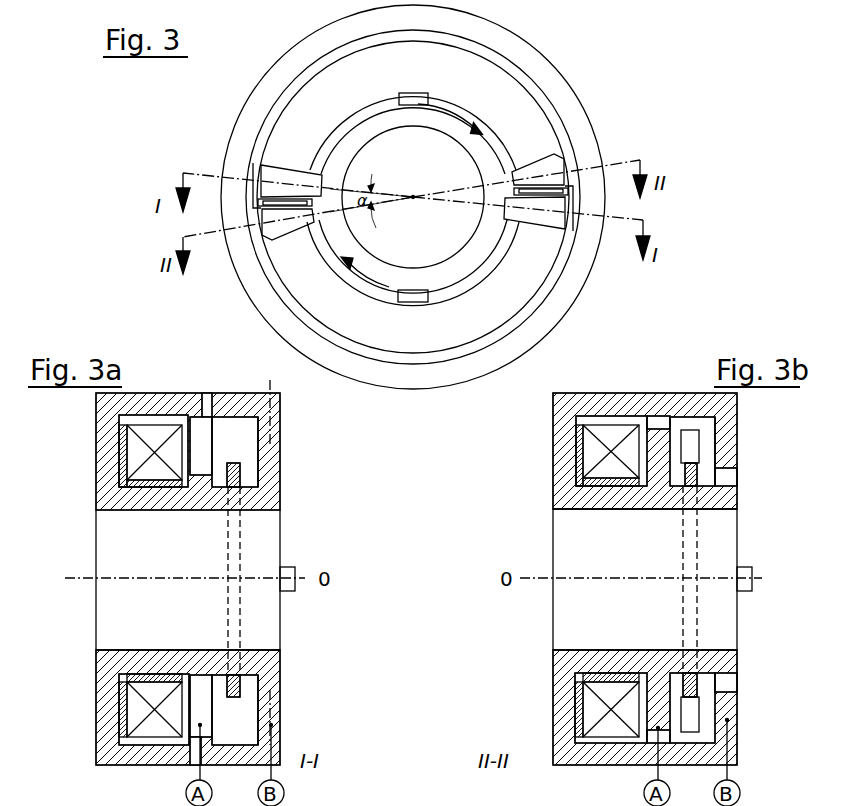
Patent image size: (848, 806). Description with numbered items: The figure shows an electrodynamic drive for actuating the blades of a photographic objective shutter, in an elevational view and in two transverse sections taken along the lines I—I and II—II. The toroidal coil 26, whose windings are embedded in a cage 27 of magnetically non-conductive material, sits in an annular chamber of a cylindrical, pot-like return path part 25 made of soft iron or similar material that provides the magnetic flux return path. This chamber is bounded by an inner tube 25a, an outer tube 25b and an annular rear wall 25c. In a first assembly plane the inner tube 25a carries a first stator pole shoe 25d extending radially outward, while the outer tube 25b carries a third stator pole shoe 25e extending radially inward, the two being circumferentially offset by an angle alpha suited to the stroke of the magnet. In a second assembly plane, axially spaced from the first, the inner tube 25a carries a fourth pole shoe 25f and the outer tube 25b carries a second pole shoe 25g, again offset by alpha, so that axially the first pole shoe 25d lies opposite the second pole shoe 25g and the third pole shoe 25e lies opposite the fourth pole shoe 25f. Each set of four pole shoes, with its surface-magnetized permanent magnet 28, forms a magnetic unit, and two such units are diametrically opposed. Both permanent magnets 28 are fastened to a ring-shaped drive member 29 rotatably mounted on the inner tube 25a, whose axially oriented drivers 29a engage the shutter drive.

In FIG. 3a, the return path part 25 is at (110, 745).
In FIG. 3b, the return path part 25 is at (578, 755).
In FIG. 3a, the inner tube 25a is at (148, 497).
In FIG. 3b, the inner tube 25a is at (575, 497).
In FIG. 3, the outer tube 25b is at (495, 42).
In FIG. 3a, the outer tube 25b is at (155, 407).
In FIG. 3b, the outer tube 25b is at (607, 410).
In FIG. 3a, the annular rear wall 25c is at (108, 470).
In FIG. 3a, the first stator pole shoe 25d is at (150, 649).
In FIG. 3b, the first stator pole shoe 25d is at (608, 585).
In FIG. 3a, the third stator pole shoe 25e is at (272, 599).
In FIG. 3b, the third stator pole shoe 25e is at (657, 425).
In FIG. 3, the fourth stator pole shoe 25f is at (408, 219).
In FIG. 3a, the fourth stator pole shoe 25f is at (270, 471).
In FIG. 3b, the fourth stator pole shoe 25f is at (722, 470).
In FIG. 3, the second stator pole shoe 25g is at (412, 219).
In FIG. 3a, the second stator pole shoe 25g is at (272, 423).
In FIG. 3b, the second stator pole shoe 25g is at (722, 423).
In FIG. 3, the toroidal coil 26 is at (520, 280).
In FIG. 3a, the toroidal coil 26 is at (152, 440).
In FIG. 3b, the toroidal coil 26 is at (616, 722).
In FIG. 3a, the cage 27 is at (99, 513).
In FIG. 3b, the cage 27 is at (578, 706).
In FIG. 3, the permanent magnet 28 is at (215, 205).
In FIG. 3b, the permanent magnet 28 is at (693, 437).
In FIG. 3, the drive member 29 is at (475, 281).
In FIG. 3a, the drive member 29 is at (242, 530).
In FIG. 3b, the drive member 29 is at (700, 530).
In FIG. 3, the drivers 29a is at (405, 415).
In FIG. 3a, the drivers 29a is at (288, 592).
In FIG. 3b, the drivers 29a is at (752, 572).